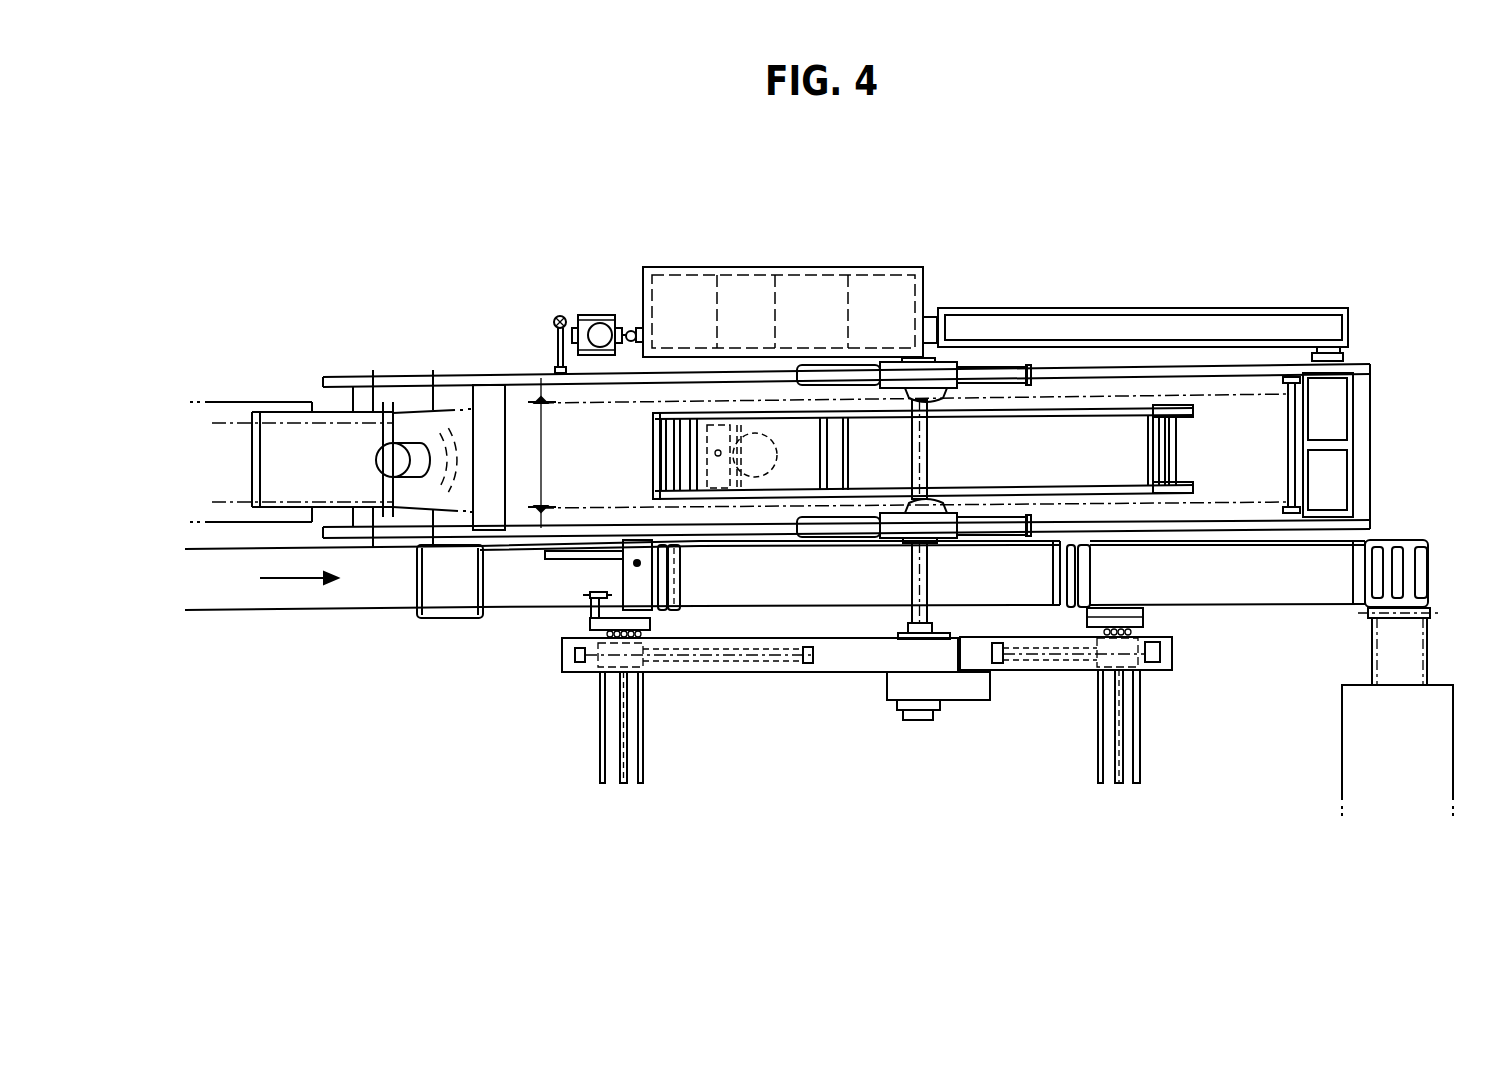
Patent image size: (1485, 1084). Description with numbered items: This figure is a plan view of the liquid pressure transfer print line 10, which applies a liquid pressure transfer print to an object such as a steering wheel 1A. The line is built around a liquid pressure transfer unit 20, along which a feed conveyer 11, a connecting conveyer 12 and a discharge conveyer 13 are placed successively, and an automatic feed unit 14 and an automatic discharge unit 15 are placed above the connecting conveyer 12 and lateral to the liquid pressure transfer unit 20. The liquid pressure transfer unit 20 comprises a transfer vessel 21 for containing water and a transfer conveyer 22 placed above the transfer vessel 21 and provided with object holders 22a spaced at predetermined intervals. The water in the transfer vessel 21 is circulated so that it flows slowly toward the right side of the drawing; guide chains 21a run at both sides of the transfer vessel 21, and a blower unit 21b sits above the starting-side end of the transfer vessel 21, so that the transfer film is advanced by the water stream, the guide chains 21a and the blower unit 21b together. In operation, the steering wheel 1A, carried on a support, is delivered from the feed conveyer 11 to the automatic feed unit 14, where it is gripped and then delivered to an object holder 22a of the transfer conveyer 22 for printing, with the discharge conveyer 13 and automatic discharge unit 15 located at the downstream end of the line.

The liquid pressure transfer print line 10 is at (1312, 178).
The feed conveyer 11 is at (353, 600).
The connecting conveyer 12 is at (822, 595).
The discharge conveyer 13 is at (1223, 593).
The automatic feed unit 14 is at (815, 667).
The automatic discharge unit 15 is at (1032, 662).
The liquid pressure transfer unit 20 is at (1215, 294).
The transfer vessel 21 is at (745, 433).
The guide chains 21a is at (1281, 393).
The blower unit 21b is at (421, 447).
The transfer conveyer 22 is at (1070, 400).
The object holder 22a is at (745, 442).
The steering wheel 1A is at (772, 463).